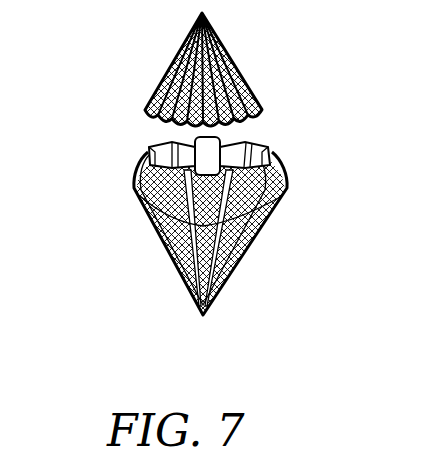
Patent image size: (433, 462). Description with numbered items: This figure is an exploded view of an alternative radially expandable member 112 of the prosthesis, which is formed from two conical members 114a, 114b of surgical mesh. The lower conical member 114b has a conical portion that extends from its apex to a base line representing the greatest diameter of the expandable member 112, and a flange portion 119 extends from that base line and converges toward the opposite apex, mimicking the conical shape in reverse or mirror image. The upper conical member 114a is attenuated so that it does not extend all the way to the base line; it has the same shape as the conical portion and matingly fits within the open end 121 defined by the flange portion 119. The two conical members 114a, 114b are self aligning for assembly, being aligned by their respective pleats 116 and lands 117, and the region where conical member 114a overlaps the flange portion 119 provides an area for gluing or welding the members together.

The radially expandable member 112 is at (273, 50).
The conical member 114a is at (167, 34).
The conical member 114b is at (146, 251).
The pleats 116 is at (160, 185).
The lands 117 is at (150, 200).
The flange portion 119 is at (283, 175).
The open end 121 is at (240, 133).